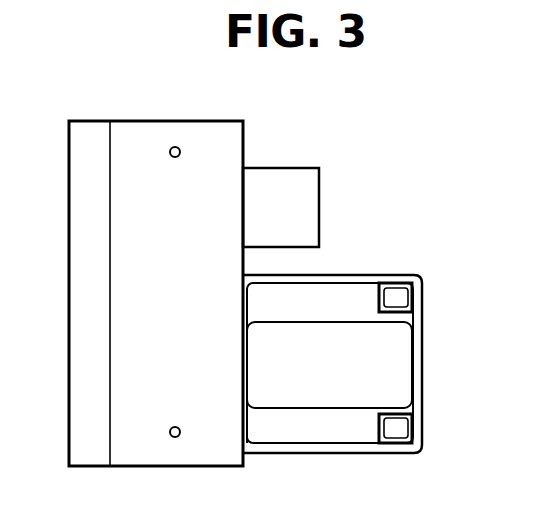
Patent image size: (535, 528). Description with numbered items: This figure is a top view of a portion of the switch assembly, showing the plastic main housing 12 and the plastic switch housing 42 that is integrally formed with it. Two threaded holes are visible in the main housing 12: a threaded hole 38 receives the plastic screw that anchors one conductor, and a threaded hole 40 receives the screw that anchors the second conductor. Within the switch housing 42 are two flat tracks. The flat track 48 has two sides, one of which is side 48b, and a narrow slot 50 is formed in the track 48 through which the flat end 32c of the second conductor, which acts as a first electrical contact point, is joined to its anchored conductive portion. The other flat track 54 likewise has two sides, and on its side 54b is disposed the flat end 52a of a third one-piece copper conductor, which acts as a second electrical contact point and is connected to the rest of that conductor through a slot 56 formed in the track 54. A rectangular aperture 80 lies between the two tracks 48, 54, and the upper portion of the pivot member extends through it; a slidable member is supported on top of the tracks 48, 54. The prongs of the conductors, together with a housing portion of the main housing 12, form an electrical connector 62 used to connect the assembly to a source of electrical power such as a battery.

The main housing 12 is at (130, 455).
The threaded hole 38 is at (181, 150).
The threaded hole 40 is at (175, 437).
The electrical connector 62 is at (347, 162).
The switch housing 42 is at (423, 362).
The flat track 54 is at (307, 303).
The side of track 54b is at (340, 290).
The flat track 48 is at (285, 421).
The side of track 48b is at (338, 433).
The rectangular aperture 80 is at (275, 323).
The flat end 52a is at (397, 298).
The slot 56 is at (387, 297).
The narrow slot 50 is at (380, 425).
The flat end 32c is at (399, 432).